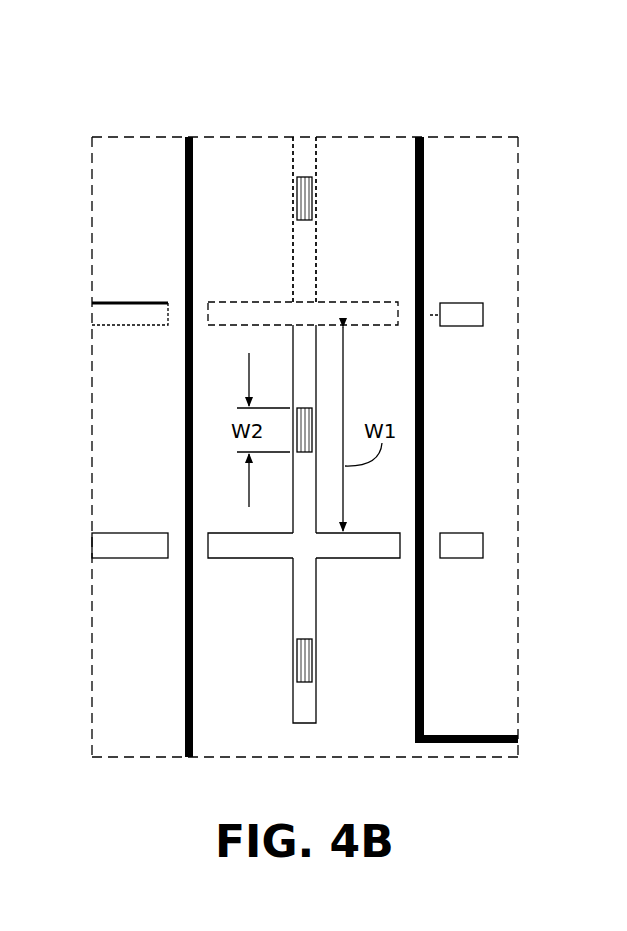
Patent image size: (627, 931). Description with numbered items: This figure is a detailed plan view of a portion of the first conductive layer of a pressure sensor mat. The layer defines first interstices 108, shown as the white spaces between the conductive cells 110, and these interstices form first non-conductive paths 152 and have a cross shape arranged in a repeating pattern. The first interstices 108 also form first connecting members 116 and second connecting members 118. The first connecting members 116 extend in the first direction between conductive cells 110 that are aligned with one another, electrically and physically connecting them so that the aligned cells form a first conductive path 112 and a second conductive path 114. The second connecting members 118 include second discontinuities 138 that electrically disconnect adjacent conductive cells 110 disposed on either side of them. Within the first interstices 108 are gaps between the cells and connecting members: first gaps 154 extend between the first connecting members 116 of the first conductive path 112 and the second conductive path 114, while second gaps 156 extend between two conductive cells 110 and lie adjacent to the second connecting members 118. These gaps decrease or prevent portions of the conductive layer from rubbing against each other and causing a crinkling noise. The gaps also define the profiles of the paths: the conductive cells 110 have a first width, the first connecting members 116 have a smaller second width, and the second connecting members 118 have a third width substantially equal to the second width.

The first interstices 108 is at (278, 550).
The conductive cells 110 is at (146, 235).
The first conductive path 112 is at (470, 155).
The second conductive path 114 is at (124, 156).
The first connecting members 116 is at (175, 314).
The second connecting members 118 is at (317, 198).
The second discontinuities 138 is at (297, 196).
The first non-conductive paths 152 is at (316, 124).
The first gaps 154 is at (236, 314).
The second gaps 156 is at (302, 153).